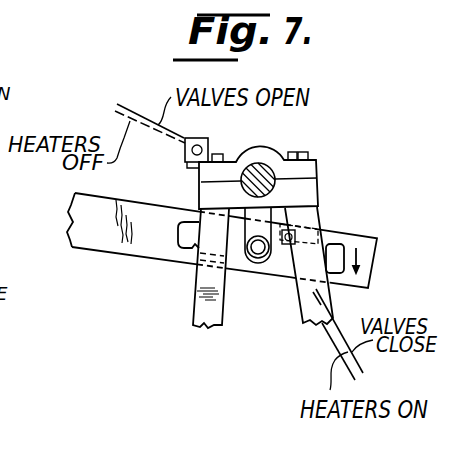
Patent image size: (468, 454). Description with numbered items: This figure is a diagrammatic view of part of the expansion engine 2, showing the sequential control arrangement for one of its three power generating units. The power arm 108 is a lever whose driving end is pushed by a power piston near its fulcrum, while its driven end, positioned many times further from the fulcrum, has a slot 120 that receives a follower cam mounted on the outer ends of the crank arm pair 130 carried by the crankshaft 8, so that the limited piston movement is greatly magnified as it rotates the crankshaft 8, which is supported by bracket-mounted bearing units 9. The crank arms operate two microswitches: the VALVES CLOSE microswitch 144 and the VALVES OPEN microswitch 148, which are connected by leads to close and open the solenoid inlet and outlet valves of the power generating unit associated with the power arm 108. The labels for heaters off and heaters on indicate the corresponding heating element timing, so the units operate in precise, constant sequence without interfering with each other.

The expansion engine 2 is at (88, 223).
The crankshaft 8 is at (201, 182).
The bearing units 9 is at (267, 148).
The VALVES OPEN microswitch 148 is at (208, 143).
The crank arm pair 130 is at (257, 236).
The power arm 108 is at (85, 242).
The slot 120 is at (193, 247).
The VALVES CLOSE microswitch 144 is at (289, 268).